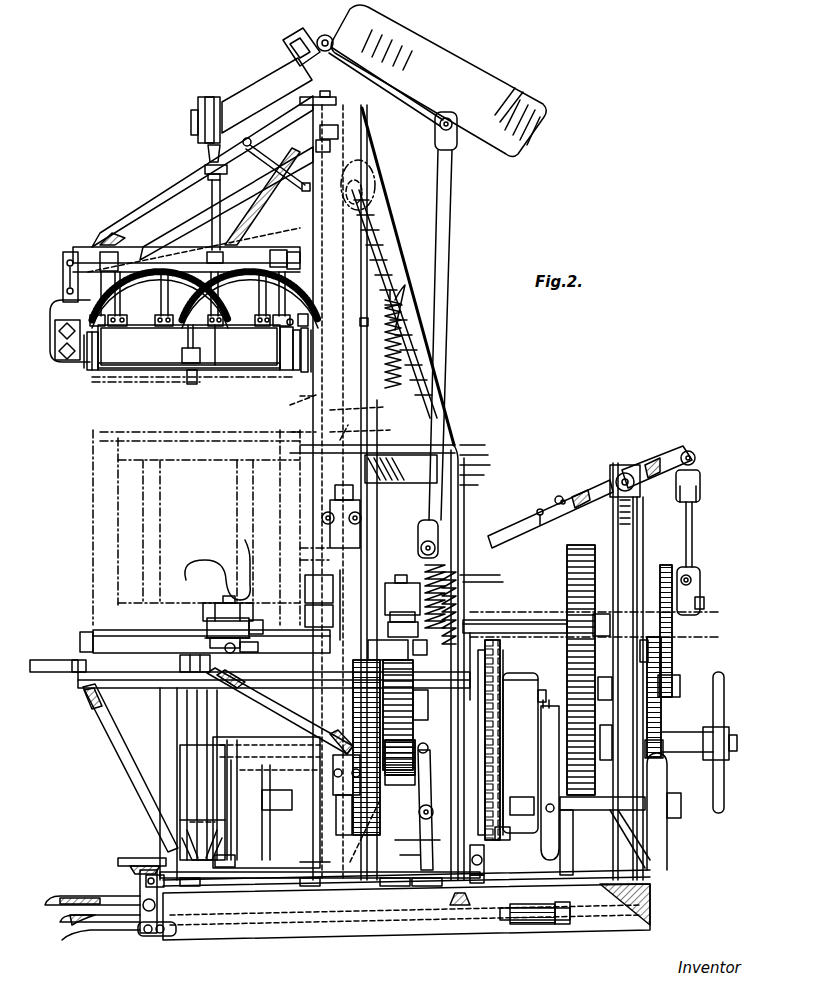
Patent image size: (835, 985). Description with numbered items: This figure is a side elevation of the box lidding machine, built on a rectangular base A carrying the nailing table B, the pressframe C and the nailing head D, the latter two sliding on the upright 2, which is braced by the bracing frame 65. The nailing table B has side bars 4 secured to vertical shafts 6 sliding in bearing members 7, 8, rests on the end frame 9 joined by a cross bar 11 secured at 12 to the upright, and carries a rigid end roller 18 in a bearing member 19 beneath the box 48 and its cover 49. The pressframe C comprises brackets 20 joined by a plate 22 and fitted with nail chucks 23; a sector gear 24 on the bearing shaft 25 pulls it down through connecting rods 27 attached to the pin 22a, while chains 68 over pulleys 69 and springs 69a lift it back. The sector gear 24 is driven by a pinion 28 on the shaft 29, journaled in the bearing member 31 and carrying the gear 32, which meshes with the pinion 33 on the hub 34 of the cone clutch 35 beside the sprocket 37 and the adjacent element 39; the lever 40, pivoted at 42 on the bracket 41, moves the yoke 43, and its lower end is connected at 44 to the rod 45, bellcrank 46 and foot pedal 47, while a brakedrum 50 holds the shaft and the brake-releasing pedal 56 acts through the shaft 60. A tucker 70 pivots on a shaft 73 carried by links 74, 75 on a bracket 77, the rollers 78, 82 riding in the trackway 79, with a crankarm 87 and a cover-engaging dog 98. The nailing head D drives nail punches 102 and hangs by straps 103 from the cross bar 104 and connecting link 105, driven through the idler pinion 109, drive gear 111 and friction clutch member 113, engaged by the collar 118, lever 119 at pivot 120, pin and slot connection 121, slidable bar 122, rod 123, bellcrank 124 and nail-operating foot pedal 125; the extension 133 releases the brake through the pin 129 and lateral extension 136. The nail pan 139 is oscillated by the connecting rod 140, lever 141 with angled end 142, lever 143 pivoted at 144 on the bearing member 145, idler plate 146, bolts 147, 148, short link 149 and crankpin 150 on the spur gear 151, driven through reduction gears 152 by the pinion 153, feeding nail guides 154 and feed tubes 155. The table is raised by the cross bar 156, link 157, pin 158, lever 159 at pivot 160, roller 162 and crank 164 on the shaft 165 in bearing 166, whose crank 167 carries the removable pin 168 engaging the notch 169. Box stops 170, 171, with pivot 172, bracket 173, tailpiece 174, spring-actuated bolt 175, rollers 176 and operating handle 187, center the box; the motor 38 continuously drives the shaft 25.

The upright 2 is at (350, 122).
The side bar 4 is at (80, 672).
The vertically extending shaft 6 is at (305, 580).
The bearing member 7 is at (333, 788).
The bearing member 8 is at (362, 518).
The end frame 9 is at (168, 792).
The cross bar 11 is at (115, 690).
The securing point 12 is at (292, 715).
The roller 18 is at (112, 634).
The rigid bearing member 19 is at (86, 636).
The bracket 20 is at (62, 280).
The flat plate 22 is at (380, 356).
The pivot pin or bolt 22a is at (366, 316).
The nail chuck 23 is at (165, 322).
The sector gear 24 is at (383, 737).
The bearing shaft 25 is at (678, 745).
The connecting rod 27 is at (392, 430).
The pinion 28 is at (378, 603).
The shaft 29 is at (541, 625).
The bearing member 31 is at (618, 618).
The gear 32 is at (567, 577).
The pinion 33 is at (598, 690).
The hub 34 is at (551, 691).
The cone clutch 35 is at (530, 690).
The sprocket 37 is at (502, 670).
The motor 38 is at (668, 845).
The chain 39 is at (502, 651).
The lever 40 is at (573, 855).
The bracket 41 is at (580, 810).
The pivot 42 is at (545, 812).
The yoke 43 is at (546, 708).
The connection 44 is at (572, 914).
The rod 45 is at (420, 920).
The bellcrank 46 is at (168, 925).
The foot pedal 47 is at (72, 896).
The box 48 is at (92, 474).
The cover 49 is at (262, 388).
The brakedrum 50 is at (400, 583).
The brake-releasing pedal 56 is at (155, 860).
The shaft 60 is at (425, 649).
The bracing frame 65 is at (448, 425).
The chain or cable 68 is at (390, 252).
The pulley 69 is at (372, 183).
The spring 69a is at (405, 295).
The tucker 70 is at (172, 330).
The shaft 73 is at (163, 366).
The link 74 is at (90, 370).
The link 75 is at (300, 375).
The bracket 77 is at (56, 338).
The roller 78 is at (303, 313).
The trackway 79 is at (294, 430).
The roller 82 is at (294, 404).
The crankarm 87 is at (290, 342).
The cover-engaging dog 98 is at (200, 382).
The nail punch 102 is at (222, 306).
The strap 103 is at (369, 407).
The cross bar 104 is at (362, 462).
The connecting link 105 is at (298, 550).
The idler pinion 109 is at (427, 698).
The drive gear 111 is at (400, 763).
The friction clutch member 113 is at (470, 665).
The collar 118 is at (400, 789).
The lever 119 is at (414, 843).
The pivot 120 is at (419, 816).
The pin and slot connection 121 is at (419, 892).
The slidable bar 122 is at (396, 884).
The rod 123 is at (296, 884).
The bellcrank 124 is at (148, 900).
The nail-operating foot pedal 125 is at (78, 925).
The pin 129 is at (508, 842).
The extension 133 is at (486, 880).
The lateral extension 136 is at (486, 862).
The nail pan 139 is at (480, 85).
The connecting rod 140 is at (450, 200).
The lever 141 is at (522, 530).
The end 142 is at (568, 495).
The lever 143 is at (657, 462).
The pivot 144 is at (625, 472).
The upstanding bearing member 145 is at (636, 548).
The idler plate 146 is at (551, 523).
The bolt or rivet 147 is at (557, 496).
The rivet or bolt 148 is at (566, 508).
The short link 149 is at (694, 550).
The crankpin 150 is at (706, 605).
The spur gear 151 is at (672, 636).
The reduction gear 152 is at (682, 685).
The pinion 153 is at (664, 755).
The nail guide 154 is at (240, 95).
The feed tube 155 is at (240, 327).
The cross bar 156 is at (212, 663).
The link 157 is at (195, 730).
The pin 158 is at (185, 820).
The lever 159 is at (185, 838).
The pivot 160 is at (180, 755).
The roller 162 is at (236, 851).
The crank 164 is at (238, 796).
The shaft 165 is at (248, 740).
The bearing 166 is at (272, 745).
The crank 167 is at (300, 810).
The removable pin 168 is at (356, 828).
The notch 169 is at (330, 857).
The box stop 170 is at (230, 604).
The box stop 171 is at (206, 623).
The pivot 172 is at (205, 640).
The upstanding bracket 173 is at (224, 650).
The tailpiece 174 is at (264, 621).
The spring-actuated bolt 175 is at (260, 640).
The roller 176 is at (217, 570).
The operating handle 187 is at (40, 662).
The base A is at (234, 940).
The nailing table B is at (72, 667).
The pressframe C is at (36, 326).
The nailing head D is at (98, 241).